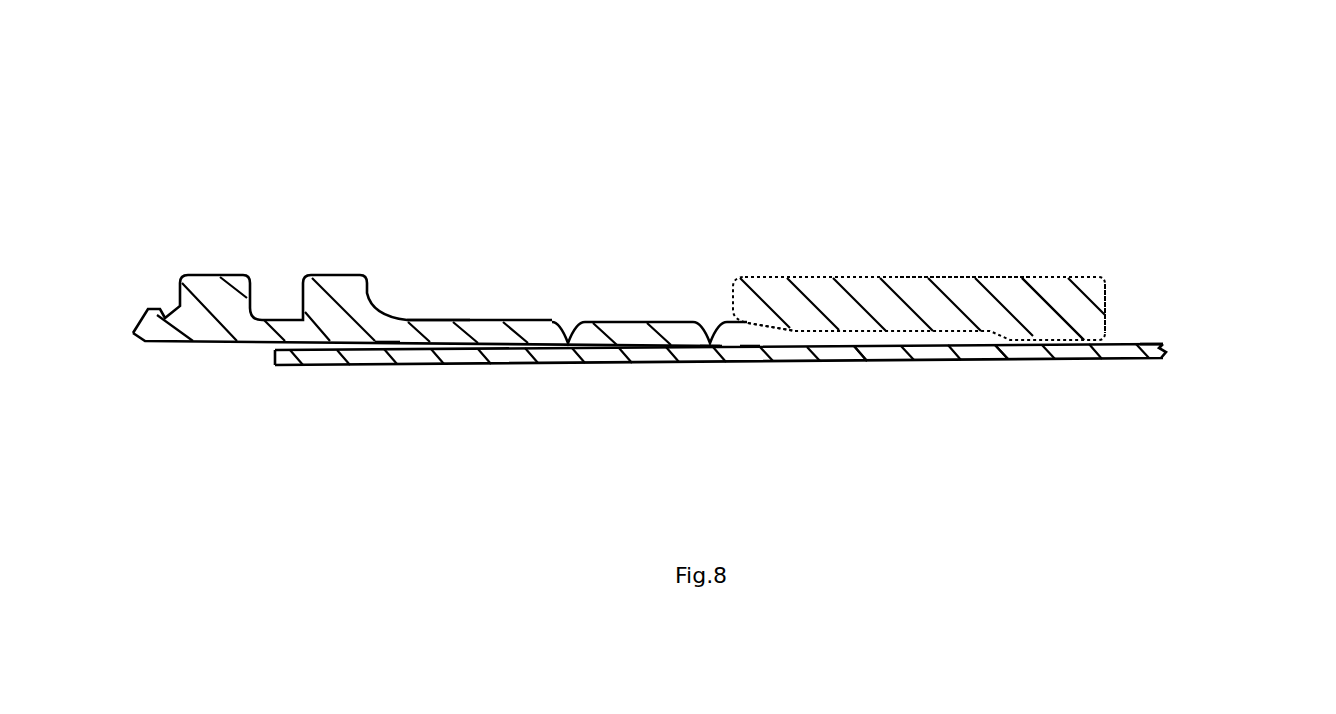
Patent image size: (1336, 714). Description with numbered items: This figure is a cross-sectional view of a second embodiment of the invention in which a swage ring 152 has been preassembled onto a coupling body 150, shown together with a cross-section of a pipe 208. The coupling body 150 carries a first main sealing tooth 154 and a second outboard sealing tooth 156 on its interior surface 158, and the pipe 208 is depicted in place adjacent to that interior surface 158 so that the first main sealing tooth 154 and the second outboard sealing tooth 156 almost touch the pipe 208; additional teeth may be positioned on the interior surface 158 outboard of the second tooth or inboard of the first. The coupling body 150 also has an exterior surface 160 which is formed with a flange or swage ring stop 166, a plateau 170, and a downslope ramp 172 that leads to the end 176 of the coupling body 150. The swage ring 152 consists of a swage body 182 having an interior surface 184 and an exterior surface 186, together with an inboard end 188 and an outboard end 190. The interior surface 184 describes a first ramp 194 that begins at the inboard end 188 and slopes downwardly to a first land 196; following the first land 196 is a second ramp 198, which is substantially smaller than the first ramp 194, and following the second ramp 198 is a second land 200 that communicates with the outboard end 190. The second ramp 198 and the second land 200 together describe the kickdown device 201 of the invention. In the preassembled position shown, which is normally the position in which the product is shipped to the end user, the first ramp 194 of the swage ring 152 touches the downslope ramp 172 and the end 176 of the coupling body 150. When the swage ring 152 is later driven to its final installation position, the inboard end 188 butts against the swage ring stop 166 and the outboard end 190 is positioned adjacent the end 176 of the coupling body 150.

The coupling body 150 is at (273, 80).
The swage ring 152 is at (996, 172).
The first main sealing tooth 154 is at (568, 343).
The second outboard sealing tooth 156 is at (712, 343).
The interior surface 158 is at (387, 343).
The exterior surface 160 is at (432, 318).
The swage ring stop 166 is at (331, 245).
The plateau 170 is at (498, 320).
The downslope ramp 172 is at (700, 320).
The end 176 is at (747, 327).
The swage body 182 is at (929, 278).
The interior surface 184 is at (862, 330).
The exterior surface 186 is at (992, 277).
The inboard end 188 is at (740, 283).
The outboard end 190 is at (1105, 308).
The first ramp 194 is at (765, 327).
The first land 196 is at (833, 330).
The second ramp 198 is at (984, 390).
The second land 200 is at (1085, 343).
The kickdown device 201 is at (984, 390).
The pipe 208 is at (1162, 358).